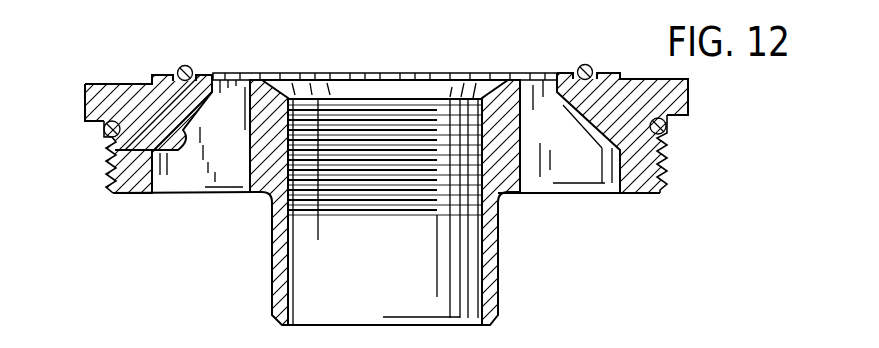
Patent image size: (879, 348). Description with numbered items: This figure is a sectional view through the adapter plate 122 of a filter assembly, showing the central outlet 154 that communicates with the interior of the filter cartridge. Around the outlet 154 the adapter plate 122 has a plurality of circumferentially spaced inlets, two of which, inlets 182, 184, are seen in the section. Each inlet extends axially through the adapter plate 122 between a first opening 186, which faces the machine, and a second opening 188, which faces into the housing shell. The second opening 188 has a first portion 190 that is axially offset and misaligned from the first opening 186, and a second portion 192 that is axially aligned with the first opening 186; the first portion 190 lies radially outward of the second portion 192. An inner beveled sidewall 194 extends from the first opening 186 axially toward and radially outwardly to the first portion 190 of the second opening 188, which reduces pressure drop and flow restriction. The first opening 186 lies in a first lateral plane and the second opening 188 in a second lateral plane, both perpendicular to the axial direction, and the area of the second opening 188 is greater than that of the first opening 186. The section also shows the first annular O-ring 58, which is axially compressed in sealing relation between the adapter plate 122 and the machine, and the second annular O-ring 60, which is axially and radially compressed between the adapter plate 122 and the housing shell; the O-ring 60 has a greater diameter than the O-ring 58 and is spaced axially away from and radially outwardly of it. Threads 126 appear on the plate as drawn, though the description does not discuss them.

The first annular O-ring 58 is at (180, 66).
The second annular O-ring 60 is at (103, 131).
The adapter plate 122 is at (689, 88).
The external threads 126 is at (668, 155).
The central outlet 154 is at (282, 267).
The inlet 182 is at (228, 112).
The inlet 184 is at (541, 84).
The first opening 186 is at (232, 72).
The second opening 188 is at (190, 196).
The first portion 190 is at (163, 195).
The second portion 192 is at (230, 196).
The inner beveled sidewall 194 is at (107, 152).